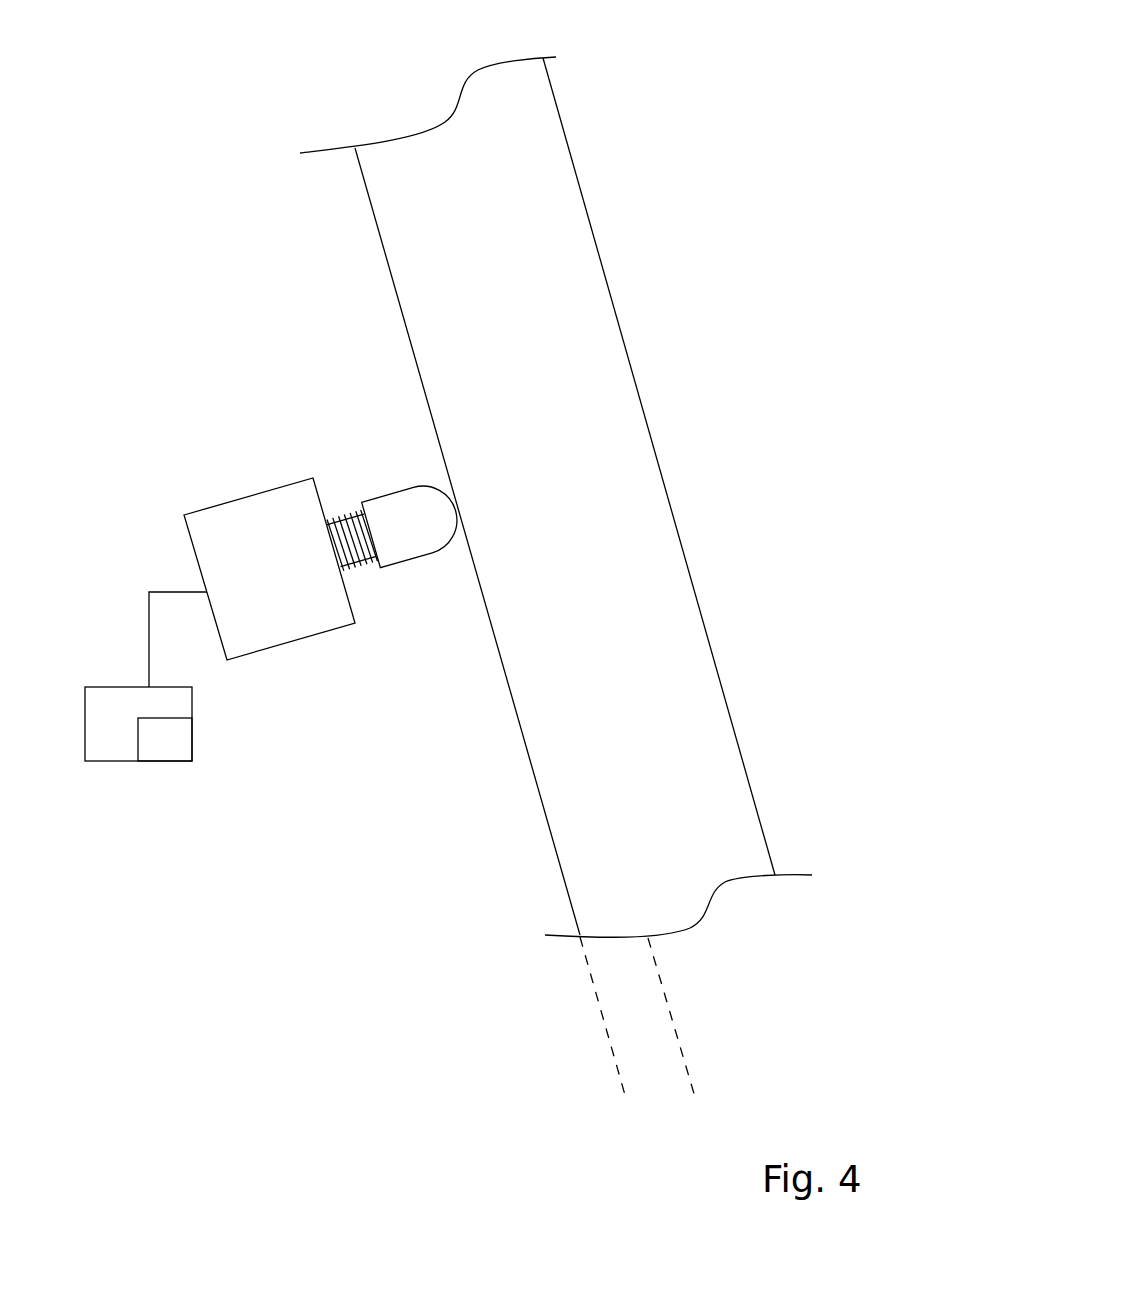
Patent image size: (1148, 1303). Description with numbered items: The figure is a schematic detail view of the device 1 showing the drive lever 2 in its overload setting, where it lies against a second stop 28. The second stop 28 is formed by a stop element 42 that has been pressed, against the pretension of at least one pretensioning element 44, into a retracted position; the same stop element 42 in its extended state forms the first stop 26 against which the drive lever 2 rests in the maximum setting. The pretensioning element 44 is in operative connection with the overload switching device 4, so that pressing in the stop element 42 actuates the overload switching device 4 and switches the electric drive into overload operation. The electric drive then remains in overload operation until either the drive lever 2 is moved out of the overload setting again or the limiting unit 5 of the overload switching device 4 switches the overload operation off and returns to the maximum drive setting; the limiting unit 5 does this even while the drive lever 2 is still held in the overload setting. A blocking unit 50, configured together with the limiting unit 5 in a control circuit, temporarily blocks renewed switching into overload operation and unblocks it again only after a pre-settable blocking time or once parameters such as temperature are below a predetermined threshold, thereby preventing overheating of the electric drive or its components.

The roll stand / pipe assembly 1 is at (775, 125).
The drive lever 2 is at (657, 505).
The overload switching device 4 is at (233, 473).
The stop element 42 is at (413, 517).
The pretensioning element 44 is at (361, 572).
The limiting unit 5 is at (107, 750).
The blocking unit 50 is at (163, 743).
The first stop 26 is at (678, 1033).
The second stop 28 is at (605, 1025).